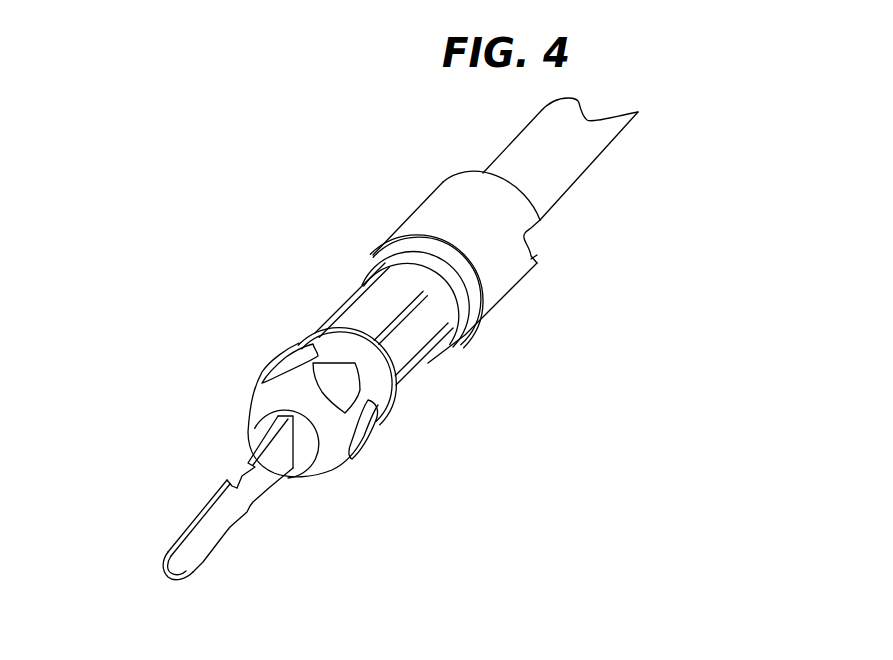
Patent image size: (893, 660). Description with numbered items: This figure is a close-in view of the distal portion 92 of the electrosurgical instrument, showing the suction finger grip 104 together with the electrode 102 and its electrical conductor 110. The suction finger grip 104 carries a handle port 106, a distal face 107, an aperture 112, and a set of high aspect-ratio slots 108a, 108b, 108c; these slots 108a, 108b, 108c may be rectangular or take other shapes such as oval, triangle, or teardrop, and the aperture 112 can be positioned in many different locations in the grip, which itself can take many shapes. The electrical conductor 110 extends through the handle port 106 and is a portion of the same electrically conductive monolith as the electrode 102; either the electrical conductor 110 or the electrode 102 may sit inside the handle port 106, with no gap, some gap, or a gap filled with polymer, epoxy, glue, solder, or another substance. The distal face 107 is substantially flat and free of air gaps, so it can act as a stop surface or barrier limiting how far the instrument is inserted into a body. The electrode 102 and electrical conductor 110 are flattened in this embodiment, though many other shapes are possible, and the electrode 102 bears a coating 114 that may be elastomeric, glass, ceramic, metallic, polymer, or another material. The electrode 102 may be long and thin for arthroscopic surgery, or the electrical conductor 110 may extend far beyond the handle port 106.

The distal portion 92 is at (548, 569).
The electrode 102 is at (203, 571).
The suction finger grip 104 is at (434, 188).
The handle port 106 is at (292, 473).
The distal face 107 is at (302, 446).
The slot 108a is at (353, 304).
The slot 108b is at (386, 335).
The slot 108c is at (428, 362).
The electrical conductor 110 is at (237, 457).
The aperture 112 is at (348, 257).
The coating 114 is at (185, 507).